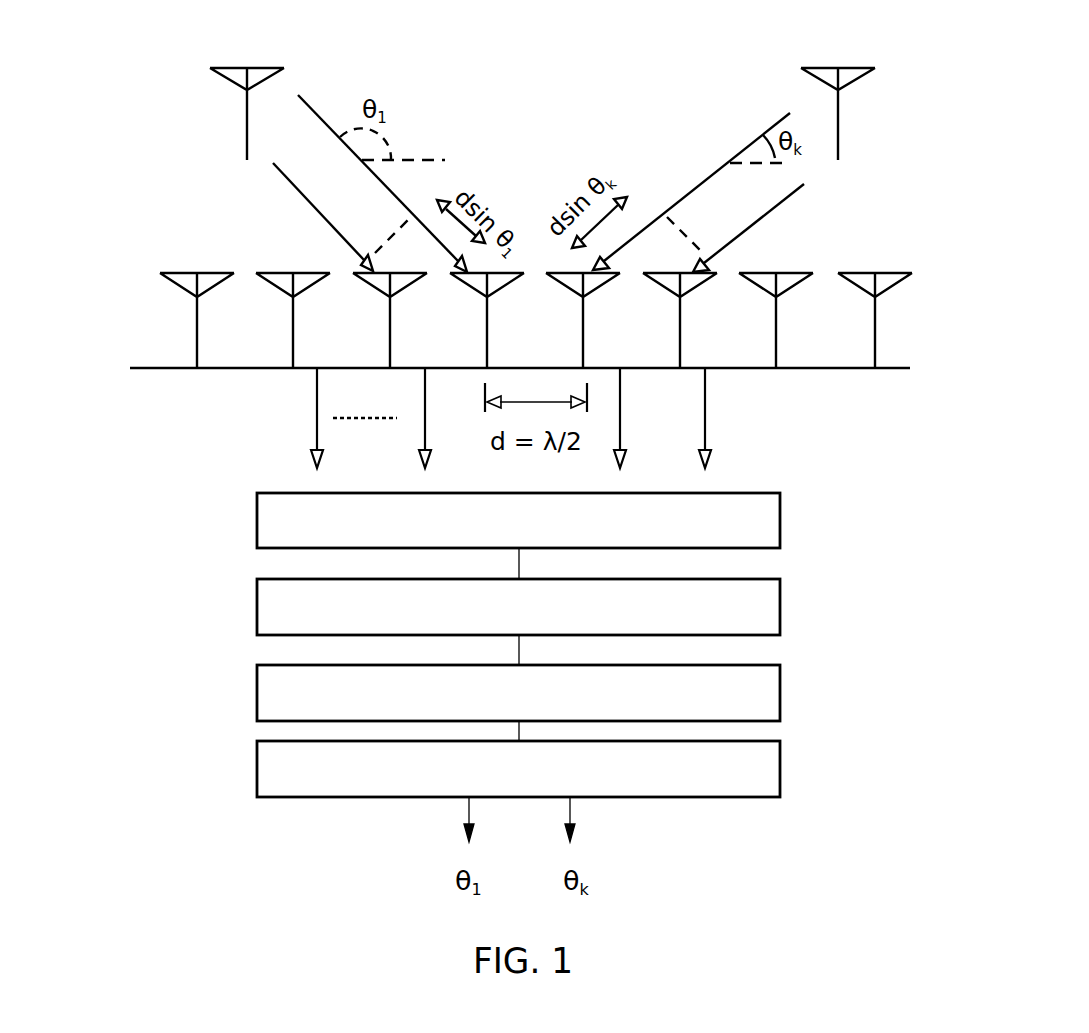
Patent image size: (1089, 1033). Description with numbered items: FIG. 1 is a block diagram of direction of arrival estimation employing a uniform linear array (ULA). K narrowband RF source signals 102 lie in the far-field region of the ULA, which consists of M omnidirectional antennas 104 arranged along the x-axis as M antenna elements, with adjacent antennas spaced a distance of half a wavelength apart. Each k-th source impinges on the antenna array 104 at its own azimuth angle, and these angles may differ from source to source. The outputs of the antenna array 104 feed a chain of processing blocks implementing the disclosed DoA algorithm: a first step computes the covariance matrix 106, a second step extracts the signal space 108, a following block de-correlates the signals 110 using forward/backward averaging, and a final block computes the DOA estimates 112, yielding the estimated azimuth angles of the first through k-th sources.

The narrowband RF source signals 102 is at (222, 117).
The omnidirectional antennas 104 is at (922, 347).
The compute covariance matrix 106 is at (755, 523).
The extract signal space 108 is at (755, 607).
The de-correlate signals block 110 is at (763, 690).
The compute DOA estimates block 112 is at (773, 773).